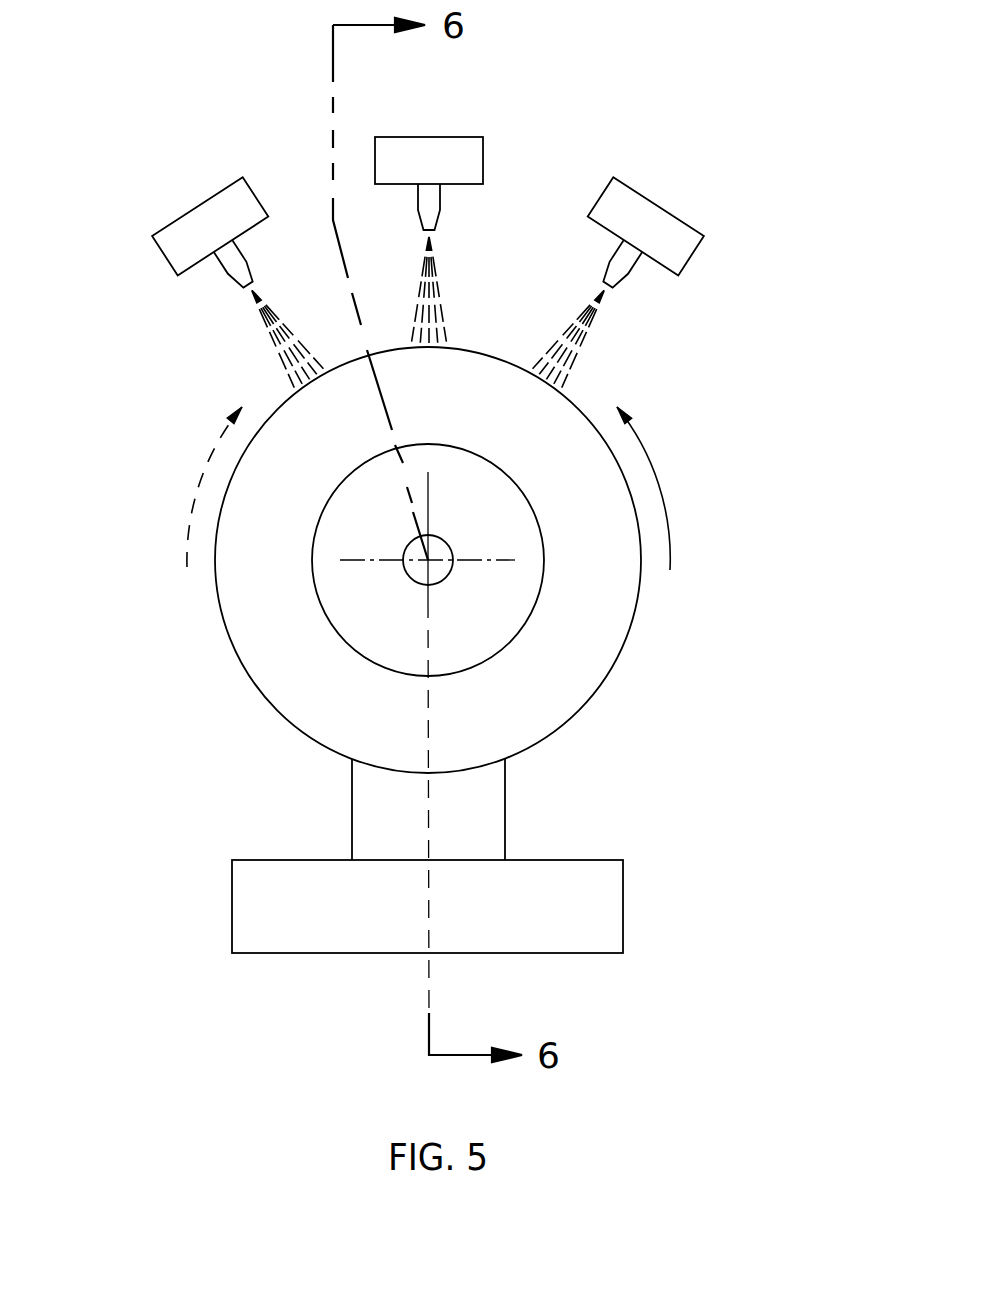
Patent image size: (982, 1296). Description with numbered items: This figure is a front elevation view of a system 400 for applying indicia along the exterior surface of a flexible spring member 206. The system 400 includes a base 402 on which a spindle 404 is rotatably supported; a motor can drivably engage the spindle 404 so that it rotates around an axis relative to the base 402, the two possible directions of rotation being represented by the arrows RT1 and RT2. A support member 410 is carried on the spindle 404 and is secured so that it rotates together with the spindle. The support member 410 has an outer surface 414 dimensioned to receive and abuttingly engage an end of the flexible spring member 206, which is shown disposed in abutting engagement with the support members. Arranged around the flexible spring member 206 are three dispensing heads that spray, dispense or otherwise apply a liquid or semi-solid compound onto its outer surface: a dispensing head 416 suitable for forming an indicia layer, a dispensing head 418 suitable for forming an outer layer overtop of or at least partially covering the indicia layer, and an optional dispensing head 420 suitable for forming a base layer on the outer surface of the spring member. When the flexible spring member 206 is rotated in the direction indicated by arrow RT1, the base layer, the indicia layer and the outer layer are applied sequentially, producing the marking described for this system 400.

The system 400 is at (640, 97).
The base 402 is at (505, 807).
The spindle 404 is at (407, 577).
The support member 410 is at (492, 628).
The outer surface 414 is at (540, 593).
The dispensing head 416 is at (455, 153).
The dispensing head 418 is at (188, 225).
The dispensing head 420 is at (665, 222).
The flexible spring member 206 is at (238, 660).
The arrow RT1 is at (660, 482).
The arrow RT2 is at (197, 490).